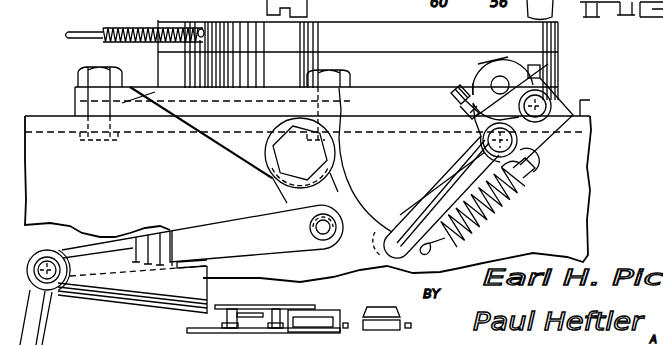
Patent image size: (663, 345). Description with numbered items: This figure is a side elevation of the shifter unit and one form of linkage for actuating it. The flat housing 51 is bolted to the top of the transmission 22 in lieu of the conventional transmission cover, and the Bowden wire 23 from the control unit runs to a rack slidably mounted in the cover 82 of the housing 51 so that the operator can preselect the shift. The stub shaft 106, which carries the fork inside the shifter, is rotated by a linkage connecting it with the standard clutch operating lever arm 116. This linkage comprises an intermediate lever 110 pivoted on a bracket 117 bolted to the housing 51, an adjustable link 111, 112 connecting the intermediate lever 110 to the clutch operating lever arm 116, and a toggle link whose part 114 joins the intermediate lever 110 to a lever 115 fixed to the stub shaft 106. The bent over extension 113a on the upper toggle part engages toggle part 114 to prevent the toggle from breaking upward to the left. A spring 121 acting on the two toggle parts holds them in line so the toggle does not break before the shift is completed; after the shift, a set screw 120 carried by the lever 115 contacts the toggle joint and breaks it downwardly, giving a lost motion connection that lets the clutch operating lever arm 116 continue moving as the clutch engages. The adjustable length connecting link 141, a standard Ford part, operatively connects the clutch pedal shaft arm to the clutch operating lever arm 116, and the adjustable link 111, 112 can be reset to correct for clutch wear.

The transmission 22 is at (600, 156).
The Bowden wire 23 is at (87, 13).
The flat housing 51 is at (163, 60).
The cover 82 is at (163, 28).
The stub shaft 106 is at (501, 85).
The intermediate lever 110 is at (357, 262).
The adjustable link 111 is at (262, 265).
The adjustable link 112 is at (152, 226).
The bent over extension 113a is at (530, 173).
The toggle link 114 is at (521, 188).
The lever 115 is at (513, 80).
The clutch operating lever arm 116 is at (50, 320).
The bracket 117 is at (83, 108).
The set screw 120 is at (452, 93).
The spring 121 is at (483, 229).
The connecting link 141 is at (130, 300).